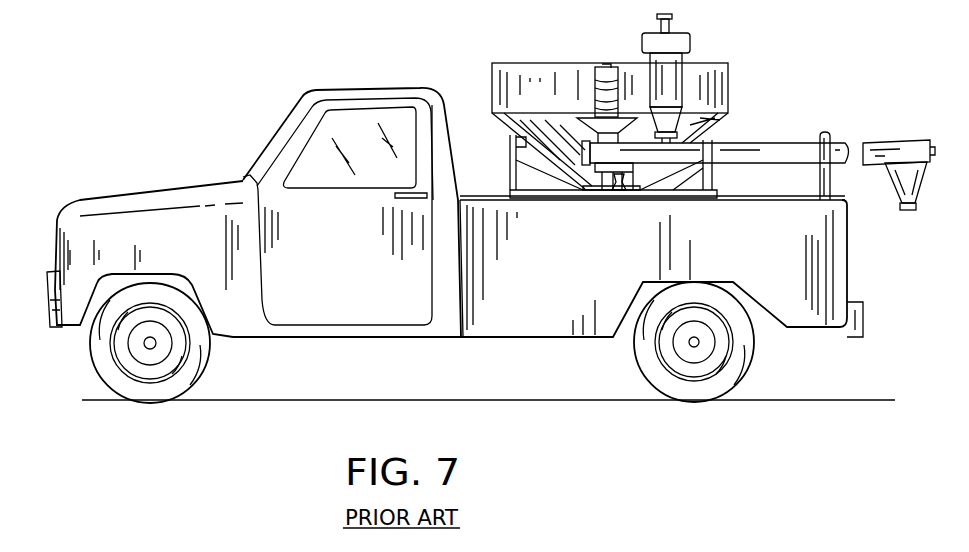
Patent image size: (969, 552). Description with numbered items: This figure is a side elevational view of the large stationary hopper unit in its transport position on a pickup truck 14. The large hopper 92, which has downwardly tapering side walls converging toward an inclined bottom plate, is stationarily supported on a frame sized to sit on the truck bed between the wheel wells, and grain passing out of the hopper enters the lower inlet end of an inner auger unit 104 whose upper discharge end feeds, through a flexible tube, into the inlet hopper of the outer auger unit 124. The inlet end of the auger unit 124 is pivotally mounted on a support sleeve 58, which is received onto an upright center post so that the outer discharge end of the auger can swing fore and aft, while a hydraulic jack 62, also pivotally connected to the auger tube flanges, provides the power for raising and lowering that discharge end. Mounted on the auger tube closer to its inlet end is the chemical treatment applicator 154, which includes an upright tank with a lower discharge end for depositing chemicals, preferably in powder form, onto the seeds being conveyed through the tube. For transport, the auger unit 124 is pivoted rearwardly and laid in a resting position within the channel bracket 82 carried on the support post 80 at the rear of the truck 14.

The pickup truck 14 is at (170, 198).
The large hopper 92 is at (553, 63).
The inner auger unit 104 is at (610, 90).
The chemical treatment applicator 154 is at (700, 65).
The auger unit 124 is at (772, 158).
The channel bracket 82 is at (832, 141).
The support post 80 is at (832, 182).
The support sleeve 58 is at (611, 180).
The hydraulic jack 62 is at (629, 180).